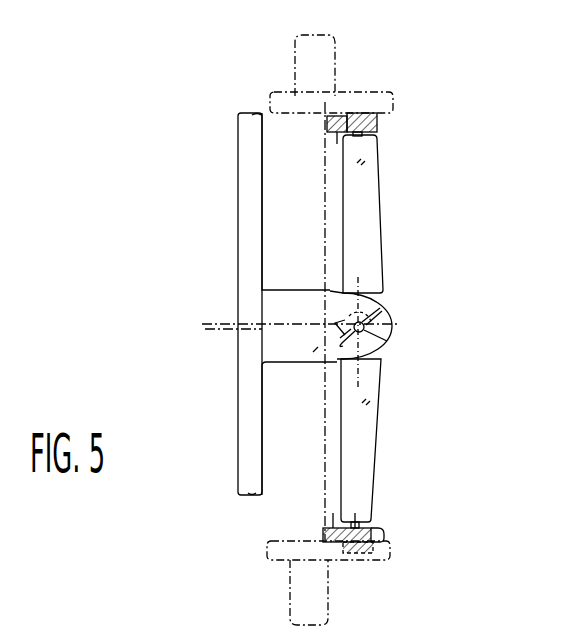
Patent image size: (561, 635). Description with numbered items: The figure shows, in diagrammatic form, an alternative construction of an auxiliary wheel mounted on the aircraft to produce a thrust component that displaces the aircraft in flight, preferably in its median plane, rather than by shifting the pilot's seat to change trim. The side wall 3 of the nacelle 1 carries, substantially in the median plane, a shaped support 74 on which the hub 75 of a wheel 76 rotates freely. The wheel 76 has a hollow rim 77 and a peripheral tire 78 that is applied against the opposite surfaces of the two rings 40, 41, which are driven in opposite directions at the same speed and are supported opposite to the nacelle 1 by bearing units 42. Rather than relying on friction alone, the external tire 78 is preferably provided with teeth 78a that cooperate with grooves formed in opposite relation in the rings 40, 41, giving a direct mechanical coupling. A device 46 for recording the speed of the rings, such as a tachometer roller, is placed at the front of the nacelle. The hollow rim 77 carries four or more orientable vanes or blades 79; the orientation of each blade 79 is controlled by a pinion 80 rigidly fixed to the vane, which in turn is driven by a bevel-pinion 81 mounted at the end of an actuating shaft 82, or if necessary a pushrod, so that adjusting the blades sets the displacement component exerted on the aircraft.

The nacelle 1 is at (198, 159).
The lateral wall 3 is at (240, 208).
The ring 40 is at (347, 112).
The ring 41 is at (350, 556).
The bearing unit 42 is at (328, 608).
The device for recording the speed of the rings 46 is at (296, 90).
The shaped support 74 is at (284, 287).
The hub 75 is at (395, 322).
The wheel 76 is at (414, 190).
The hollow rim 77 is at (337, 432).
The peripheral tire 78 is at (382, 532).
The teeth 78a is at (385, 553).
The orientable vanes or blades 79 is at (373, 247).
The pinion 80 is at (394, 343).
The bevel-pinion 81 is at (299, 421).
The actuating shaft 82 is at (210, 330).